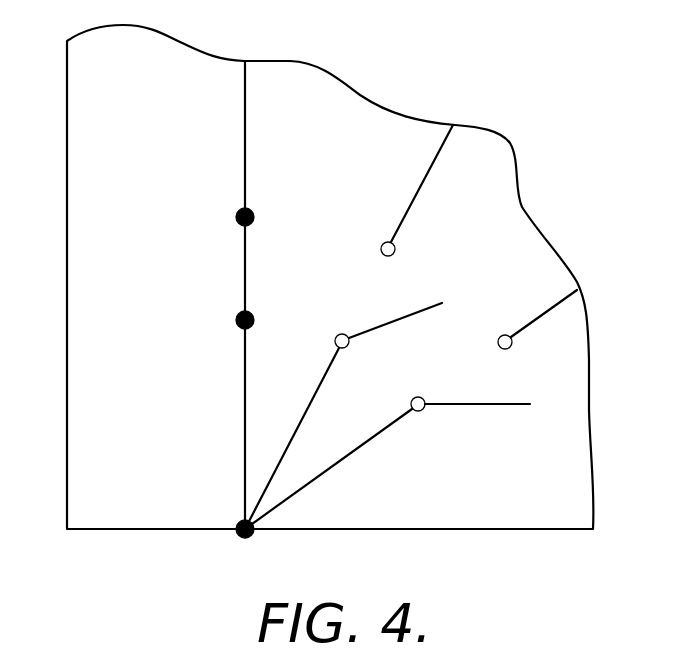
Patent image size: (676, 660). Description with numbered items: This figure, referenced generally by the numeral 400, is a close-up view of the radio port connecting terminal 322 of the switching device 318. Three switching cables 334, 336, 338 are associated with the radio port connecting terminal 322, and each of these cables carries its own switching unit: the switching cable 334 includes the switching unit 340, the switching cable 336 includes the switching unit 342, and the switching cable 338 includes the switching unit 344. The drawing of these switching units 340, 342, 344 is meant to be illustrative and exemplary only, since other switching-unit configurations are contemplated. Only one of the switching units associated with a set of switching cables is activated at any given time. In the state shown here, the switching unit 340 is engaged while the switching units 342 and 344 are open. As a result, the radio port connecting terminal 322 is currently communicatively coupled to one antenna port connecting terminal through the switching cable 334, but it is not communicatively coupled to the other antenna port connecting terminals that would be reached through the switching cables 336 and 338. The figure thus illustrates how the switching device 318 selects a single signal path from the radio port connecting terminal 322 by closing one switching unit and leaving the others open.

The switching device 318 is at (67, 352).
The radio port connecting terminal 322 is at (243, 538).
The switching cable 334 is at (245, 412).
The switching unit 340 is at (245, 268).
The switching cable 336 is at (307, 405).
The switching cable 338 is at (367, 439).
The switching unit 342 is at (408, 317).
The switching unit 344 is at (488, 402).
The close-up view 400 is at (612, 95).